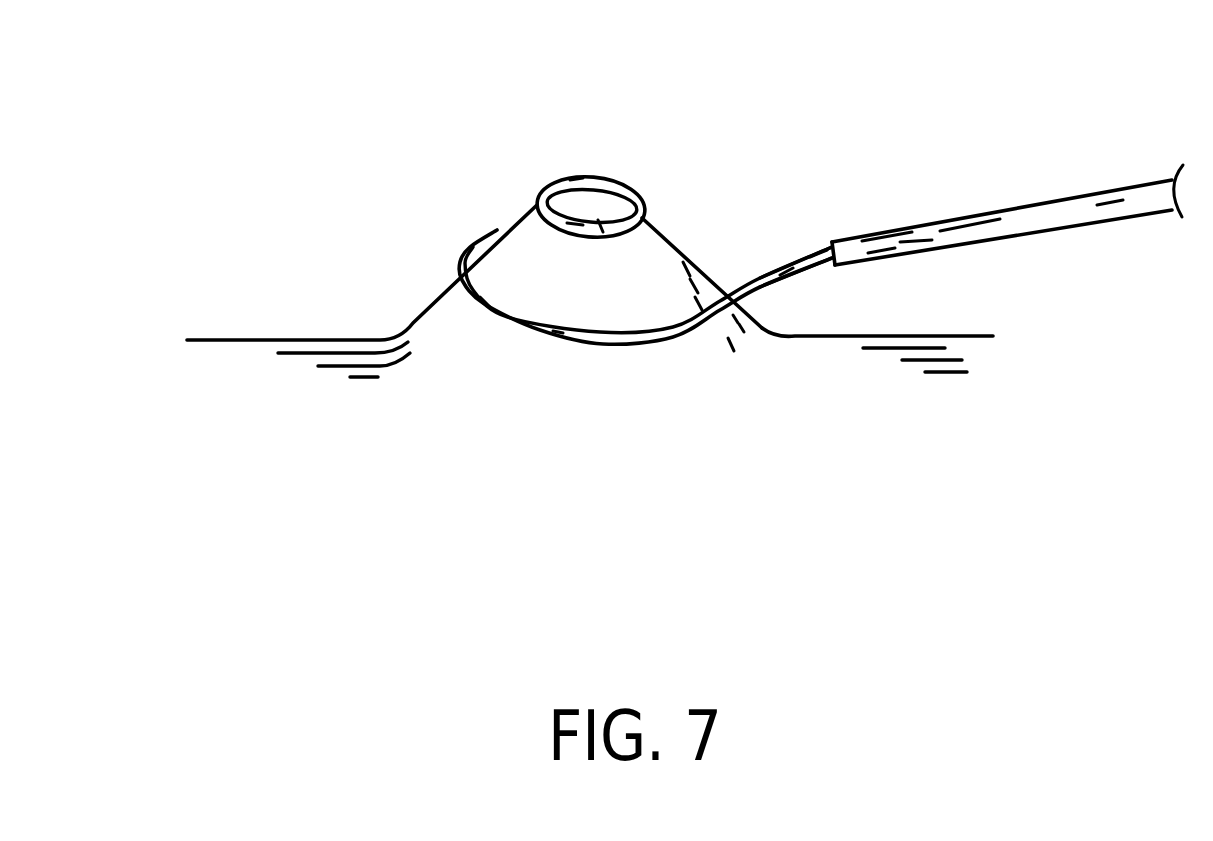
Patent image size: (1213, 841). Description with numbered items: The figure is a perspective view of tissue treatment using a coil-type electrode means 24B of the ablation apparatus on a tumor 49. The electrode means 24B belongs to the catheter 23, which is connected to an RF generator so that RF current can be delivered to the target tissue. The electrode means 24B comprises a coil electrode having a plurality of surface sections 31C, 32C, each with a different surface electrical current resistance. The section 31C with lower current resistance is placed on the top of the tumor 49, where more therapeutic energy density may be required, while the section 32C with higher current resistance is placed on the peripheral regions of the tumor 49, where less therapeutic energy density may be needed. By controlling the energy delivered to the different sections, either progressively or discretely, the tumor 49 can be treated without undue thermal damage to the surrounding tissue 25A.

The catheter 23 is at (1012, 198).
The coil-type electrode means 24B is at (817, 230).
The surrounding tissue 25A is at (258, 357).
The surface section with lower current resistance 31C is at (620, 177).
The surface section with higher current resistance 32C is at (552, 317).
The tumor 49 is at (607, 212).